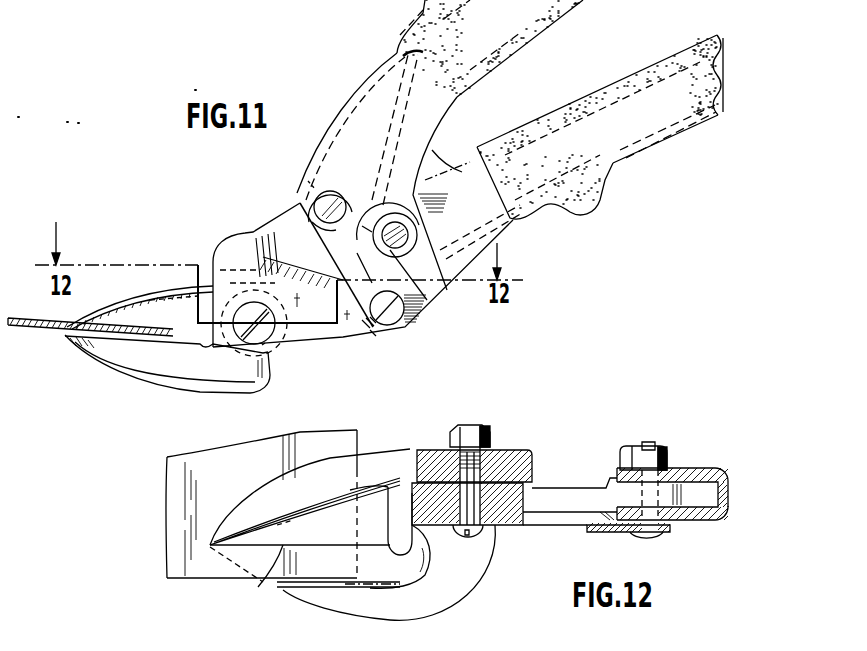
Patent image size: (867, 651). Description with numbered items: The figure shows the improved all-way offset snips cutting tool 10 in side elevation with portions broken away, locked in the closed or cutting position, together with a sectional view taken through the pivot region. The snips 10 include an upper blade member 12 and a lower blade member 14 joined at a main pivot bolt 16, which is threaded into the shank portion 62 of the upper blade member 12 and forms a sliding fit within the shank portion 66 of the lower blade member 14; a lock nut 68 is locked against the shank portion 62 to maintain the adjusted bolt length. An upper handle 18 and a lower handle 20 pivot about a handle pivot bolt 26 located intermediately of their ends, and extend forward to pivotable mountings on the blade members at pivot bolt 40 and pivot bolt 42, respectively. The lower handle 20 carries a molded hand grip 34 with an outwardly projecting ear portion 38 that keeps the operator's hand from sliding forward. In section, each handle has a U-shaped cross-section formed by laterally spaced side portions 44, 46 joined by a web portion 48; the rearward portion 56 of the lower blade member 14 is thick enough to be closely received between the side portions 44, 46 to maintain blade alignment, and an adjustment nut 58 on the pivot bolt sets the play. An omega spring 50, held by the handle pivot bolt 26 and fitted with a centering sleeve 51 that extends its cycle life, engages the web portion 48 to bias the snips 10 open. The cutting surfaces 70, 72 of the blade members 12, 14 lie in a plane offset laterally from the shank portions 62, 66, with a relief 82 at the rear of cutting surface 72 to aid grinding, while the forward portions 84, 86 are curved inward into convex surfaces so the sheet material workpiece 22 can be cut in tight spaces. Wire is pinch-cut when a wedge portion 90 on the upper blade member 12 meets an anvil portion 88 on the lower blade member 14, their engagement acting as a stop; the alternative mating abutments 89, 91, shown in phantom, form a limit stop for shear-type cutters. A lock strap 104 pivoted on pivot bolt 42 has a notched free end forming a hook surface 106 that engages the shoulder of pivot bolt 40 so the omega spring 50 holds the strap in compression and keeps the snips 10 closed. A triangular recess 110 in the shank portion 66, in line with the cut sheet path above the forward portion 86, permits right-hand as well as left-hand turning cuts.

In FIG. 12, the offset snips cutting tool 10 is at (578, 437).
In FIG. 11, the upper blade member 12 is at (135, 296).
In FIG. 11, the lower blade member 14 is at (130, 380).
In FIG. 12, the lower blade member 14 is at (305, 566).
In FIG. 11, the main pivot bolt 16 is at (290, 333).
In FIG. 12, the main pivot bolt 16 is at (472, 425).
In FIG. 11, the upper handle 18 is at (614, 2).
In FIG. 11, the lower handle 20 is at (640, 167).
In FIG. 12, the lower handle 20 is at (684, 462).
In FIG. 11, the sheet material workpiece 22 is at (41, 330).
In FIG. 12, the sheet material workpiece 22 is at (168, 516).
In FIG. 11, the handle pivot bolt 26 is at (428, 302).
In FIG. 11, the lower hand grip 34 is at (592, 90).
In FIG. 11, the ear portion 38 is at (571, 215).
In FIG. 11, the pivot bolt 40 is at (310, 203).
In FIG. 11, the pivot bolt 42 is at (396, 328).
In FIG. 12, the pivot bolt 42 is at (648, 441).
In FIG. 12, the side portion 44 is at (708, 466).
In FIG. 12, the side portion 46 is at (681, 522).
In FIG. 11, the web portion 48 is at (357, 98).
In FIG. 12, the web portion 48 is at (718, 495).
In FIG. 11, the omega spring 50 is at (399, 196).
In FIG. 11, the centering sleeve 51 is at (373, 199).
In FIG. 12, the rearward portion 56 is at (701, 516).
In FIG. 12, the adjustment nut 58 is at (624, 458).
In FIG. 12, the shank portion 62 is at (510, 456).
In FIG. 12, the shank portion 66 is at (532, 526).
In FIG. 12, the lock nut 68 is at (455, 437).
In FIG. 12, the cutting surface 70 is at (248, 552).
In FIG. 12, the cutting surface 72 is at (265, 576).
In FIG. 12, the relief 82 is at (380, 505).
In FIG. 12, the forward portion 84 is at (273, 481).
In FIG. 12, the forward portion 86 is at (465, 580).
In FIG. 11, the anvil portion 88 is at (248, 233).
In FIG. 11, the mating abutment 89 is at (440, 148).
In FIG. 11, the wedge portion 90 is at (262, 235).
In FIG. 11, the mating abutment 91 is at (433, 192).
In FIG. 11, the lock strap 104 is at (366, 337).
In FIG. 12, the lock strap 104 is at (618, 534).
In FIG. 11, the hook surface 106 is at (310, 178).
In FIG. 11, the recess 110 is at (268, 334).
In FIG. 12, the recess 110 is at (488, 516).